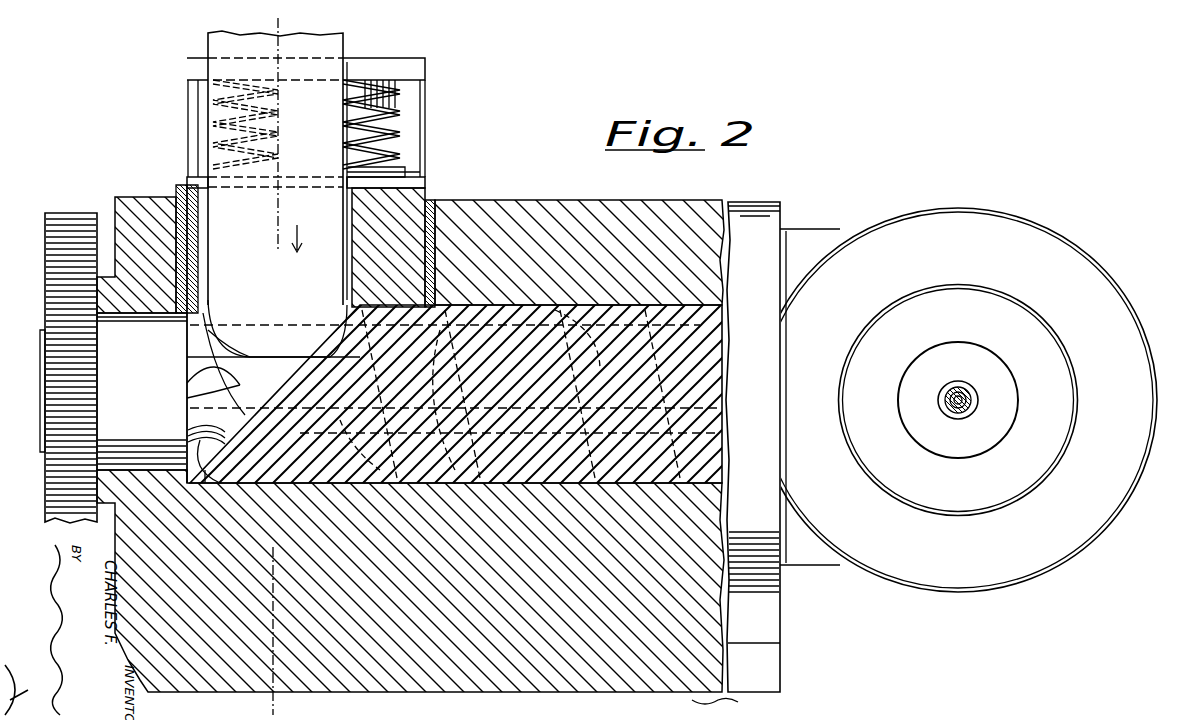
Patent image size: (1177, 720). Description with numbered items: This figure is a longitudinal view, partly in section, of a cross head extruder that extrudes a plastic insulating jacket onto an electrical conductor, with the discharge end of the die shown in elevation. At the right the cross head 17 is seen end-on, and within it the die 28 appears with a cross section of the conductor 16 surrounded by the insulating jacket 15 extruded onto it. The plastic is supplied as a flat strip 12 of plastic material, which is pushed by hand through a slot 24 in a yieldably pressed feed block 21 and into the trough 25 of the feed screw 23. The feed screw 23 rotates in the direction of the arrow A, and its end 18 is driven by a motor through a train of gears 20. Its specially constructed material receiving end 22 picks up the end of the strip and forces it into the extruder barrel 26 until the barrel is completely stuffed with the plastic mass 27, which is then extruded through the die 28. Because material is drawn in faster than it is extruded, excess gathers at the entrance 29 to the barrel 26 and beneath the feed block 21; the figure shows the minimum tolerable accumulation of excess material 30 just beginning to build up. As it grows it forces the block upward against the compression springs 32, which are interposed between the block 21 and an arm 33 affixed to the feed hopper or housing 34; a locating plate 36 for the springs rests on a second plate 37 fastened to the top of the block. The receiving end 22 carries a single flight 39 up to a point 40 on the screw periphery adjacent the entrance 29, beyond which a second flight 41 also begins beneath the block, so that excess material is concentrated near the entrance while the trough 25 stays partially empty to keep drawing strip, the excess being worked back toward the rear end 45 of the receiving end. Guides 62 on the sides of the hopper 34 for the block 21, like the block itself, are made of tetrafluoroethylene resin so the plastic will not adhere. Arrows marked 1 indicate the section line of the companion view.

The section line arrows 1 is at (290, 49).
The flat strip 12 is at (208, 88).
The insulating jacket 15 is at (963, 392).
The conductor 16 is at (960, 410).
The cross head 17 is at (940, 190).
The end of the feed screw 18 is at (40, 403).
The train of gears 20 is at (47, 222).
The feed block 21 is at (428, 192).
The material receiving end of the feed screw 22 is at (192, 384).
The feed screw 23 is at (672, 487).
The slot 24 is at (192, 183).
The trough of the feed screw 25 is at (252, 380).
The extruder barrel 26 is at (502, 303).
The plastic mass 27 is at (465, 486).
The die 28 is at (952, 392).
The entrance to the extruder barrel 29 is at (447, 303).
The accumulation of excess material 30 is at (397, 298).
The compression springs 32 is at (398, 108).
The arm 33 is at (412, 48).
The feed hopper 34 is at (136, 180).
The locating plate 36 is at (402, 167).
The second plate 37 is at (422, 170).
The flight 39 is at (300, 487).
The point on the periphery of the screw 40 is at (386, 488).
The second flight 41 is at (412, 492).
The rear end of the receiving end of the feed screw 45 is at (186, 486).
The guides 62 is at (173, 258).
The arrow A is at (152, 454).